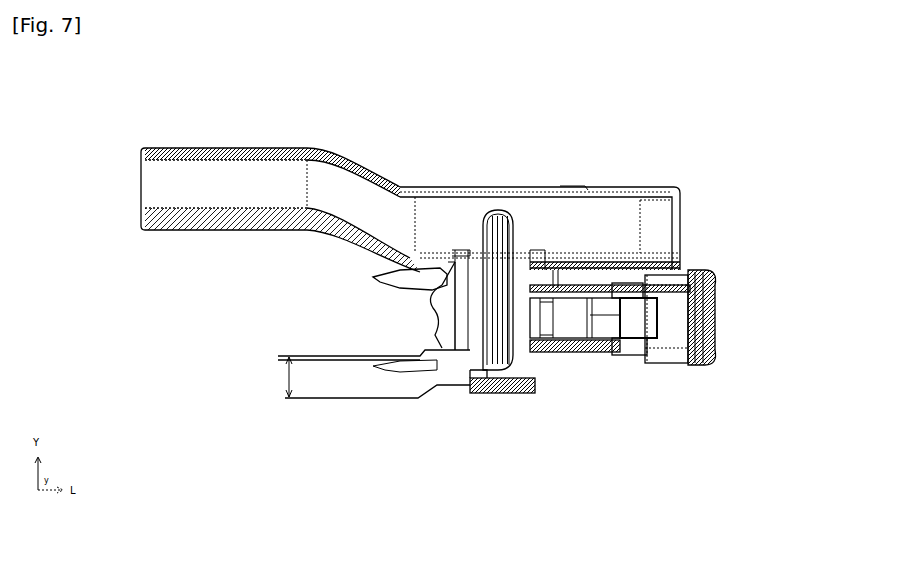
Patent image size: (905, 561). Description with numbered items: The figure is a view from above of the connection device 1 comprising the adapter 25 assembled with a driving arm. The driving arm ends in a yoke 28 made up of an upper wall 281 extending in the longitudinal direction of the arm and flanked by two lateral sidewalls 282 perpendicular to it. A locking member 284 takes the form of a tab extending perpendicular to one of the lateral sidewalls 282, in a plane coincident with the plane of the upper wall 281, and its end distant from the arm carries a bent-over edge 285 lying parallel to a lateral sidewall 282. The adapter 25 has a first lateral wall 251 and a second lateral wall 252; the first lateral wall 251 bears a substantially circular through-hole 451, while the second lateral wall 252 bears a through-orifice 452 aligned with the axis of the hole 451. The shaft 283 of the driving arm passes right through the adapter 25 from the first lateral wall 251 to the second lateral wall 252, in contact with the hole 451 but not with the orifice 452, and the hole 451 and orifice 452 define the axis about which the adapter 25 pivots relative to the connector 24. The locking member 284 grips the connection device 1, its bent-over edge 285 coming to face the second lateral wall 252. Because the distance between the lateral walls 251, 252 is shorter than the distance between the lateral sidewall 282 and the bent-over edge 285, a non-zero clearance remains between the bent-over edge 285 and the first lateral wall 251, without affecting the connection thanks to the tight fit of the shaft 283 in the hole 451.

The connection device 1 is at (92, 103).
The connector 24 is at (160, 253).
The adapter 25 is at (394, 315).
The yoke 28 is at (425, 169).
The upper wall 281 is at (435, 215).
The lateral sidewalls 282 is at (480, 190).
The shaft 283 is at (636, 318).
The locking member 284 is at (475, 396).
The bent-over edge 285 is at (470, 388).
The first lateral wall 251 is at (620, 388).
The second lateral wall 252 is at (683, 246).
The through-hole 451 is at (640, 383).
The through-orifice 452 is at (627, 262).